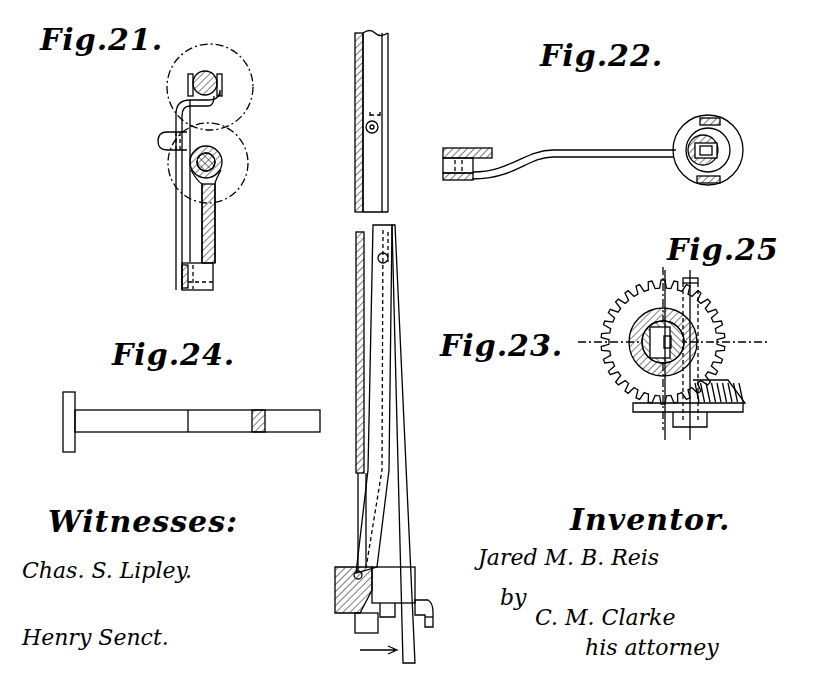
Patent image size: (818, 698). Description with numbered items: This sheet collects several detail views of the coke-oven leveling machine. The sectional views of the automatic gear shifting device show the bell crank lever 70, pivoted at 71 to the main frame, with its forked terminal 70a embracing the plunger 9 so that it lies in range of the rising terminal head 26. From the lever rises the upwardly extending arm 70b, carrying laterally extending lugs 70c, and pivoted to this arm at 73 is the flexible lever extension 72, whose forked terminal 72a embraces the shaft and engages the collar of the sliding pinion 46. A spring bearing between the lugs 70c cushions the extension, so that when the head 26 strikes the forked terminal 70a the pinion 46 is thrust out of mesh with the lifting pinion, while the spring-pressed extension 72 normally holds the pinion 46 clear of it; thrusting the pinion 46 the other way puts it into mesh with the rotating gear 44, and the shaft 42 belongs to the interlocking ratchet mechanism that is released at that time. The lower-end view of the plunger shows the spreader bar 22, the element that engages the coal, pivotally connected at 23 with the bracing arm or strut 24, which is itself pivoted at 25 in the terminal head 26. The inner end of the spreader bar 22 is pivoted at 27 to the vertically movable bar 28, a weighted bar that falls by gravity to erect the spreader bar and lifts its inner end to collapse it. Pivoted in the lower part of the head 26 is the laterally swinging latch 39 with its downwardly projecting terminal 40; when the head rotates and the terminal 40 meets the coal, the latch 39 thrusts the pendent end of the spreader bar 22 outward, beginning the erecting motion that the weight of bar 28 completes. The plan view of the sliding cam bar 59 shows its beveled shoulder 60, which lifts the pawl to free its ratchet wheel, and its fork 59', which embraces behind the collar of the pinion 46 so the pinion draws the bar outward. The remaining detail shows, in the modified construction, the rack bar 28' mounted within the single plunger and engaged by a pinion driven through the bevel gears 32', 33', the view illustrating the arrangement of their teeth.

In FIG. 22, the plunger 9 is at (687, 139).
In FIG. 23, the spreader bar 22 is at (398, 488).
In FIG. 23, the pivotal connection 23 is at (388, 259).
In FIG. 23, the bracing arm or strut 24 is at (380, 397).
In FIG. 23, the pivot 25 is at (355, 572).
In FIG. 23, the terminal head 26 is at (337, 588).
In FIG. 23, the pivotal connection 27 is at (378, 127).
In FIG. 23, the vertically movable bar 28 is at (397, 122).
In FIG. 23, the laterally swinging latch 39 is at (418, 603).
In FIG. 23, the downwardly projecting terminal 40 is at (432, 623).
In FIG. 21, the shaft 42 is at (208, 73).
In FIG. 21, the rotating gear 44 is at (243, 143).
In FIG. 21, the pinion 46 is at (247, 77).
In FIG. 24, the sliding cam bar 59 is at (197, 439).
In FIG. 24, the fork 59' is at (53, 400).
In FIG. 24, the beveled shoulder 60 is at (258, 410).
In FIG. 22, the bell crank lever 70 is at (573, 147).
In FIG. 22, the forked terminal 70a is at (705, 118).
In FIG. 22, the upwardly extending arm 70b is at (470, 181).
In FIG. 21, the laterally extending lugs 70c is at (163, 138).
In FIG. 22, the pivot 71 is at (460, 147).
In FIG. 21, the flexible lever extension 72 is at (177, 173).
In FIG. 21, the forked terminal 72a is at (187, 85).
In FIG. 21, the pivot 73 is at (187, 200).
In FIG. 25, the rack bar 28' is at (696, 342).
In FIG. 25, the bevel gear 32' is at (703, 398).
In FIG. 25, the bevel gear 33' is at (660, 356).